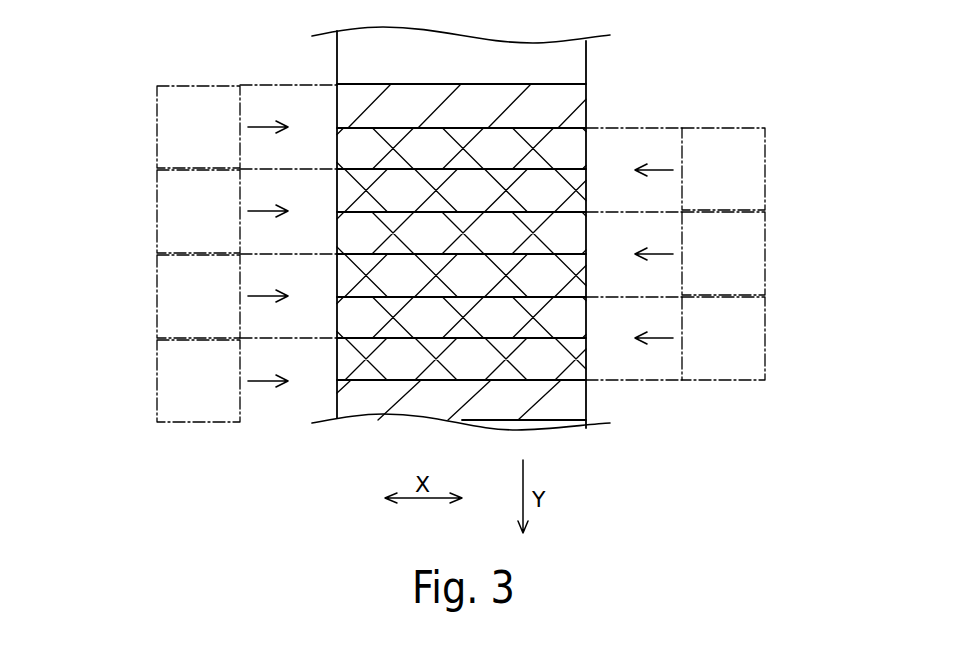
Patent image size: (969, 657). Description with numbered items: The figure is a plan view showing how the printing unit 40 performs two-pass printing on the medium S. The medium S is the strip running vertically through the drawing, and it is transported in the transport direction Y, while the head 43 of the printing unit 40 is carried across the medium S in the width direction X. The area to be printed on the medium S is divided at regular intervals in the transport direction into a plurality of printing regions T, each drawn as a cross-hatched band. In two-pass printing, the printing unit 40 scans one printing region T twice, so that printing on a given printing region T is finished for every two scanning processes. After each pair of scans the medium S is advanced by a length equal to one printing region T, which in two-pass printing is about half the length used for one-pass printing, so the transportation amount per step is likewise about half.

The printing unit 40 is at (460, 211).
The head 43 is at (157, 135).
The medium S is at (586, 65).
The printing region T is at (586, 379).